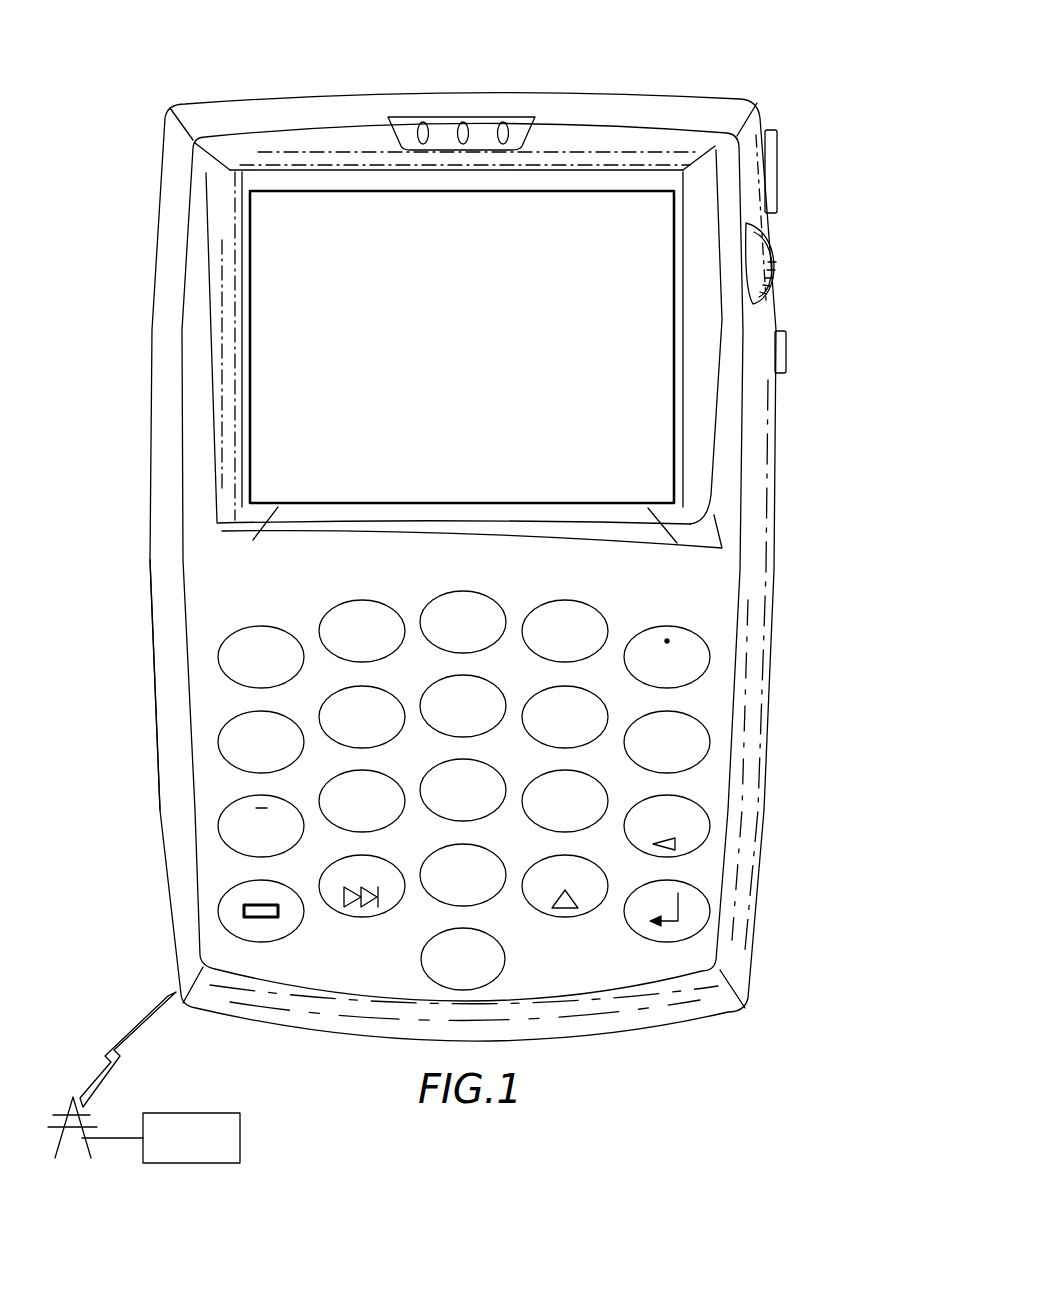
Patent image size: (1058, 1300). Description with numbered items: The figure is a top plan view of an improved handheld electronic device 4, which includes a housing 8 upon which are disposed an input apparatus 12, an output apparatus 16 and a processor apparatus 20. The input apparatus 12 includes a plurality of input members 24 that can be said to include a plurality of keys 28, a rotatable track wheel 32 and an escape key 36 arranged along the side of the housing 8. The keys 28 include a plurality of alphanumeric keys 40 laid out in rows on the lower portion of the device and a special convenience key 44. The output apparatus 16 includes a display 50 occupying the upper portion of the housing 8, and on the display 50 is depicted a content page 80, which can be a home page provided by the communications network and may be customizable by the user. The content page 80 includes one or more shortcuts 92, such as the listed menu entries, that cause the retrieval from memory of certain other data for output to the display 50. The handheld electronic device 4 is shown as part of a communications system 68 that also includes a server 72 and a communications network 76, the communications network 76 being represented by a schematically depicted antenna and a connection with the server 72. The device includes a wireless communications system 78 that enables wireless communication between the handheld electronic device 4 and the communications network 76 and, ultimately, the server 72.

The handheld electronic device 4 is at (634, 66).
The housing 8 is at (684, 97).
The input apparatus 12 is at (812, 422).
The output apparatus 16 is at (278, 437).
The processor apparatus 20 is at (195, 612).
The input members 24 is at (772, 257).
The keys 28 is at (654, 626).
The rotatable track wheel 32 is at (778, 275).
The escape key 36 is at (788, 352).
The alphanumeric keys 40 is at (700, 668).
The convenience key 44 is at (505, 962).
The display 50 is at (273, 322).
The communications system 68 is at (135, 965).
The server 72 is at (242, 1127).
The communications network 76 is at (140, 1093).
The wireless communications system 78 is at (192, 568).
The content page 80 is at (273, 235).
The shortcuts 92 is at (573, 353).